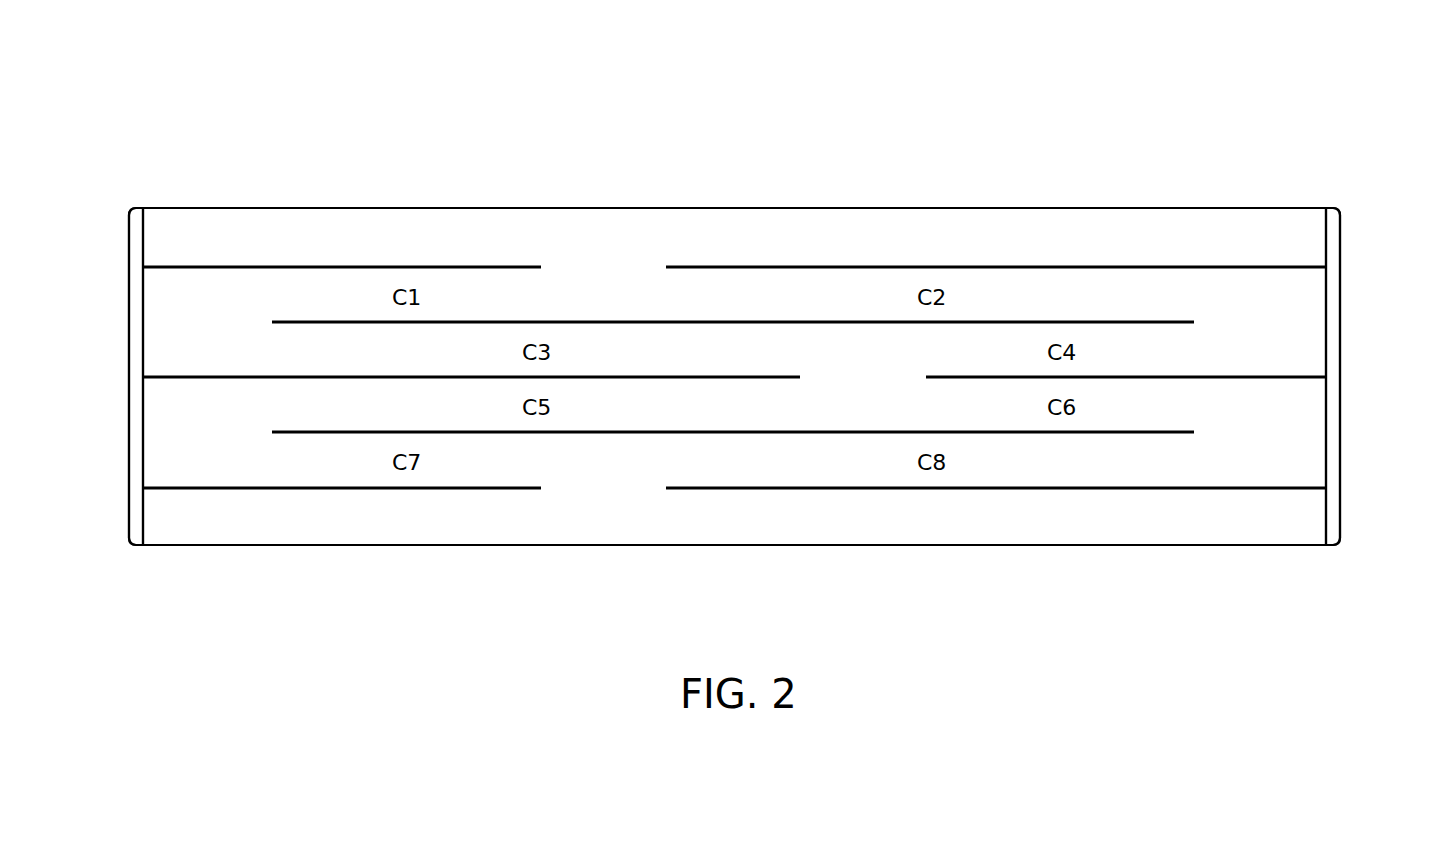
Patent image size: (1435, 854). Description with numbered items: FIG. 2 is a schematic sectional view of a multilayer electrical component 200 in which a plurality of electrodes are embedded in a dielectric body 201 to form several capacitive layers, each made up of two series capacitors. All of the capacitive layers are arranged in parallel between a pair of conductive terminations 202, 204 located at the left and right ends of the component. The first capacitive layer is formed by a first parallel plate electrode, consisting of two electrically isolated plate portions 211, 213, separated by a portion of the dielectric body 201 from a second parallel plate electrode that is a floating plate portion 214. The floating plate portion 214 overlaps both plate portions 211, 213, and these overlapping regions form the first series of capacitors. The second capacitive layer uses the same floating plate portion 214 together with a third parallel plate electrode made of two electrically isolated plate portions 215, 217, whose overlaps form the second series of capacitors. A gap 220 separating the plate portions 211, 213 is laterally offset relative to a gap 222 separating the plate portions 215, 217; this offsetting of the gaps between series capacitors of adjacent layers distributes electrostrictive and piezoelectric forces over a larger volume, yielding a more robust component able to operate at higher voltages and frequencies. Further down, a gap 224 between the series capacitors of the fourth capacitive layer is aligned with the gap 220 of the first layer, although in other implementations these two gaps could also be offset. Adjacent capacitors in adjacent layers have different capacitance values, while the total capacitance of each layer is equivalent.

The multilayer electrical component 200 is at (128, 71).
The dielectric body 201 is at (1132, 230).
The conductive termination 202 is at (128, 375).
The conductive termination 204 is at (1342, 305).
The plate portion 211 is at (240, 266).
The plate portion 213 is at (739, 266).
The floating plate portion 214 is at (885, 321).
The plate portion 215 is at (213, 378).
The plate portion 217 is at (1260, 377).
The gap 220 is at (607, 260).
The gap 222 is at (867, 379).
The gap 224 is at (595, 488).